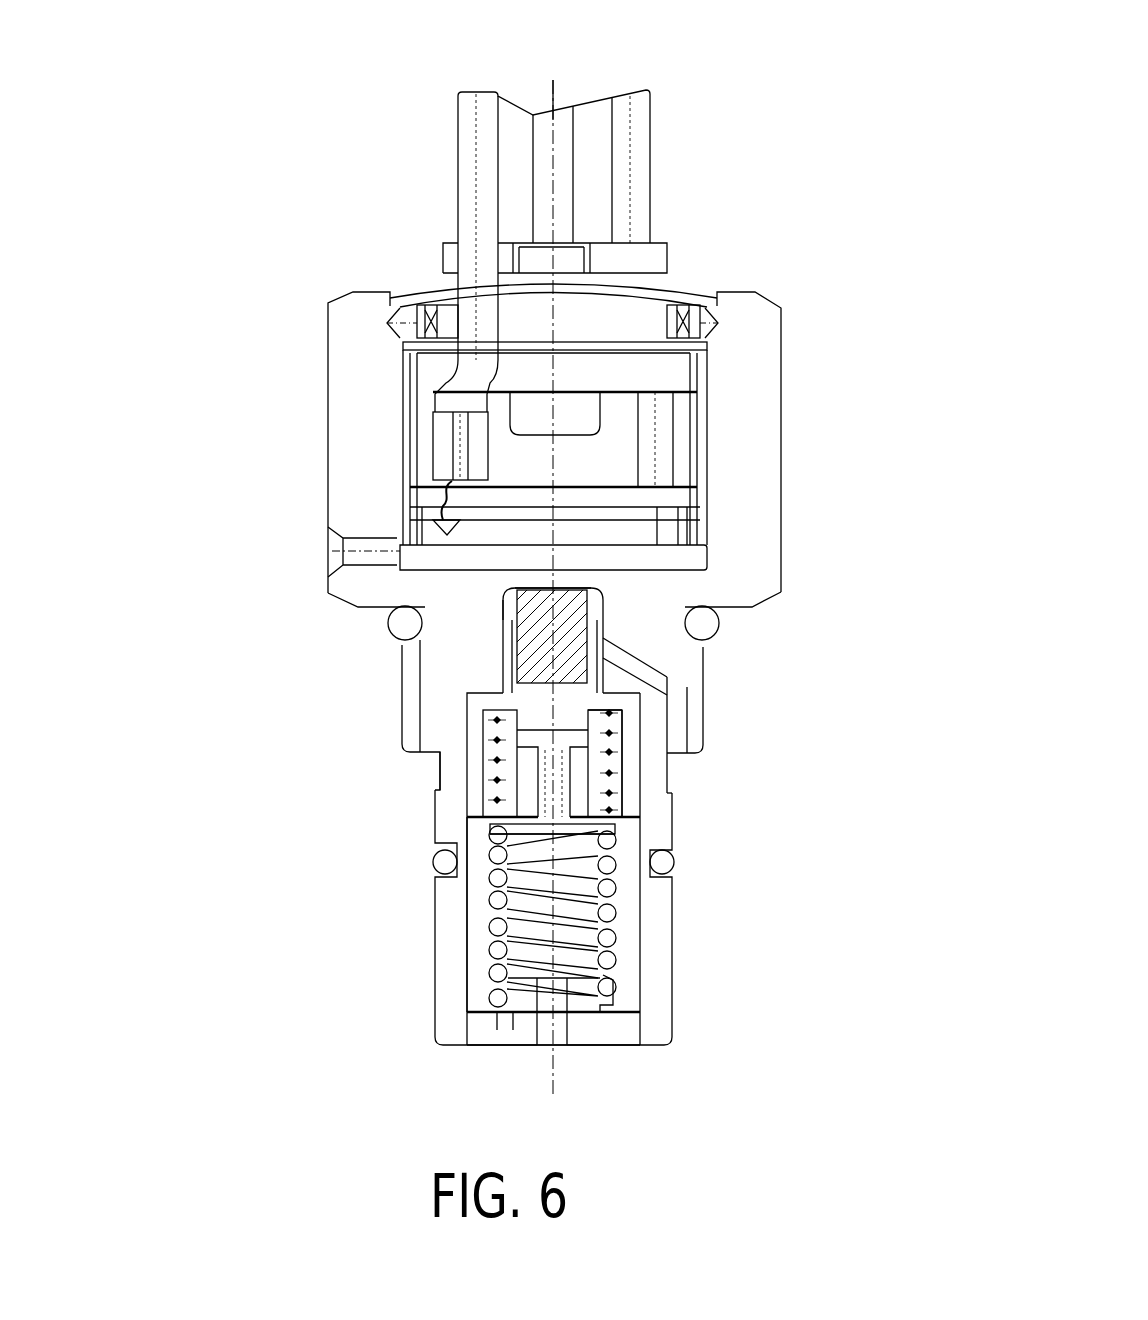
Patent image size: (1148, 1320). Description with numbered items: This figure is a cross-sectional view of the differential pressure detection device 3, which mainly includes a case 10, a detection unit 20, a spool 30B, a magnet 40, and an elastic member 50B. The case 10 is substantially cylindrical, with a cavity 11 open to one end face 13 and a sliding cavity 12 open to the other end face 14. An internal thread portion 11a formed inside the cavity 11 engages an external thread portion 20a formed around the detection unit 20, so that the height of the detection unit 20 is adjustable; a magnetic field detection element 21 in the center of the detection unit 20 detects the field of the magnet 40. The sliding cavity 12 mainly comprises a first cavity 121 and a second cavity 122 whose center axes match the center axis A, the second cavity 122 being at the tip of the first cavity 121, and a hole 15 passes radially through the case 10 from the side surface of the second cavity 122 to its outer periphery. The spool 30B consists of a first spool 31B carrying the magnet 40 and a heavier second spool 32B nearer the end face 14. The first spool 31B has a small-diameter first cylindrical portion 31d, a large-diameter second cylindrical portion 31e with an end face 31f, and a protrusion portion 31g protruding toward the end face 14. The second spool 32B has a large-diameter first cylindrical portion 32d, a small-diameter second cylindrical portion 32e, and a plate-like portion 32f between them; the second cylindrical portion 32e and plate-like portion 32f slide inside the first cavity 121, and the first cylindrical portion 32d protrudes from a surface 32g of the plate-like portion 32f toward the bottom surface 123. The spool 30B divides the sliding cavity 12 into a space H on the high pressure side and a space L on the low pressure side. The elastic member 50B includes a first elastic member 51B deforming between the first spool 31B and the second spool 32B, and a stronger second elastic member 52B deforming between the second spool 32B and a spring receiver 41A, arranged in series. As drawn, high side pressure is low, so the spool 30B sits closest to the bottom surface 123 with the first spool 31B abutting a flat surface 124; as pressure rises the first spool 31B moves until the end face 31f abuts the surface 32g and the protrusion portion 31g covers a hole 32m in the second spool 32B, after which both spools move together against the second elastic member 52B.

The differential pressure detection device 3 is at (798, 50).
The case 10 is at (785, 382).
The cavity 11 is at (395, 537).
The internal thread portion 11a is at (410, 378).
The sliding cavity 12 is at (780, 698).
The end face 13 is at (735, 291).
The end face 14 is at (666, 1046).
The hole 15 is at (640, 672).
The detection unit 20 is at (655, 184).
The external thread portion 20a is at (410, 413).
The magnetic field detection element 21 is at (560, 518).
The spool 30B is at (180, 762).
The first spool 31B is at (263, 752).
The first cylindrical portion 31d is at (495, 700).
The second cylindrical portion 31e is at (495, 727).
The end face 31f is at (520, 790).
The protrusion portion 31g is at (535, 718).
The second spool 32B is at (263, 838).
The first cylindrical portion 32d is at (470, 875).
The second cylindrical portion 32e is at (470, 790).
The plate-like portion 32f is at (470, 835).
The surface 32g is at (493, 830).
The hole 32m is at (490, 925).
The magnet 40 is at (388, 624).
The spring receiver 41A is at (445, 1038).
The elastic member 50B is at (782, 816).
The first elastic member 51B is at (630, 805).
The second elastic member 52B is at (613, 913).
The first cavity 121 is at (625, 778).
The second cavity 122 is at (625, 700).
The bottom surface 123 is at (605, 600).
The flat surface 124 is at (603, 645).
The center axis A is at (565, 80).
The space in high pressure side H is at (510, 602).
The space in low pressure side L is at (543, 812).